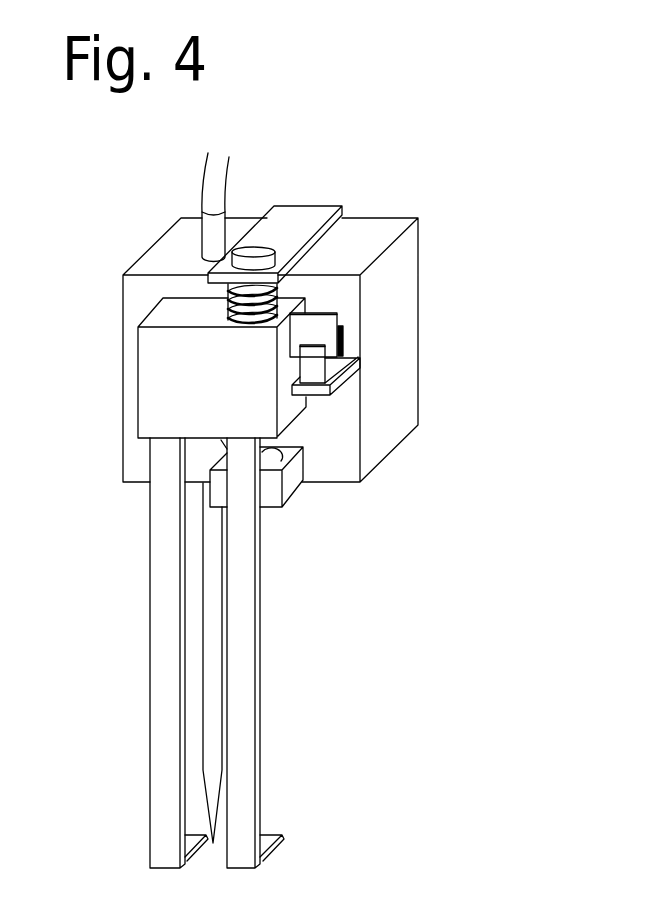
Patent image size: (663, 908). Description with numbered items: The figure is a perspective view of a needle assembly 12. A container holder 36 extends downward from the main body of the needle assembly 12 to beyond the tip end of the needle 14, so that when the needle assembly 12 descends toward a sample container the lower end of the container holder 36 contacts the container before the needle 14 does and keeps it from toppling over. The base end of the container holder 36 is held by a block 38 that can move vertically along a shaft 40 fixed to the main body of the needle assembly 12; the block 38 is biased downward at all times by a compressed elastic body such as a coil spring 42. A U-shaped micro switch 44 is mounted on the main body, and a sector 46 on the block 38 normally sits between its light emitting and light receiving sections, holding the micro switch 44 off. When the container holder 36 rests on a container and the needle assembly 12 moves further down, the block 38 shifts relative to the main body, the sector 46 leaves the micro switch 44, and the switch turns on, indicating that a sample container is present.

The needle assembly 12 is at (358, 240).
The needle 14 is at (210, 615).
The container holder 36 is at (274, 851).
The block 38 is at (170, 372).
The shaft 40 is at (262, 445).
The spring assembly 42 is at (228, 285).
The micro switch 44 is at (312, 363).
The sector 46 is at (320, 328).